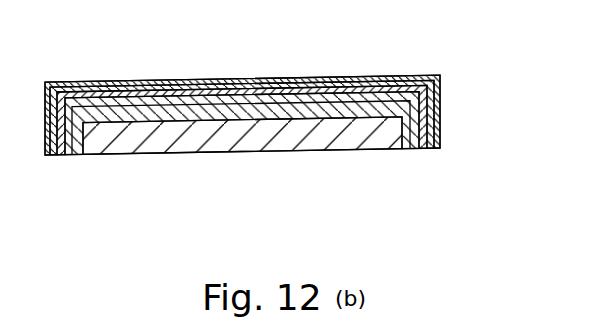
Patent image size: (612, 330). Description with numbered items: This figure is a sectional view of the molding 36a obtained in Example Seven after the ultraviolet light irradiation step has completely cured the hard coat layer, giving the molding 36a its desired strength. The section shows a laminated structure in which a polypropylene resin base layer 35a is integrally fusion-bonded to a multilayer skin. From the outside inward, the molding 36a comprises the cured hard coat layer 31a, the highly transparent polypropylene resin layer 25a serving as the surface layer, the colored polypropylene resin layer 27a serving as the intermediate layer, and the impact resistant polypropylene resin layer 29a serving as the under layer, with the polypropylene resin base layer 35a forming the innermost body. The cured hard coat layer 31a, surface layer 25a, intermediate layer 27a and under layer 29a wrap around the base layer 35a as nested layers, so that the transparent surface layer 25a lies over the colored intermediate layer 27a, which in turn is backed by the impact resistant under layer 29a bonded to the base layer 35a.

The molding 36a is at (353, 76).
The cured hard coat layer 31a is at (443, 123).
The highly transparent polypropylene resin layer 25a is at (433, 148).
The colored polypropylene resin layer 27a is at (427, 148).
The impact resistant polypropylene resin layer 29a is at (408, 149).
The polypropylene resin base layer 35a is at (242, 152).